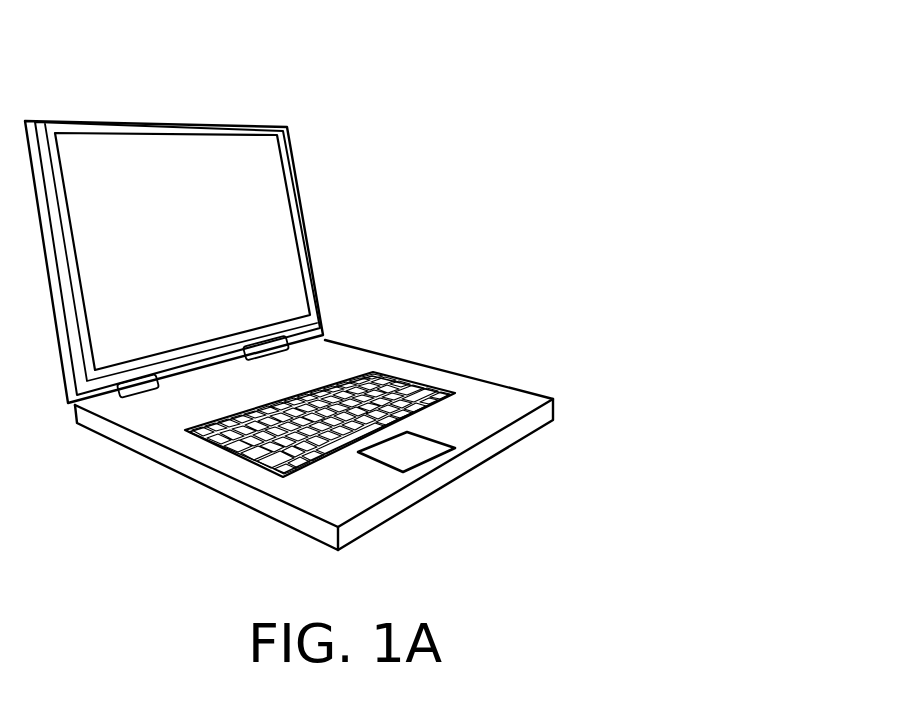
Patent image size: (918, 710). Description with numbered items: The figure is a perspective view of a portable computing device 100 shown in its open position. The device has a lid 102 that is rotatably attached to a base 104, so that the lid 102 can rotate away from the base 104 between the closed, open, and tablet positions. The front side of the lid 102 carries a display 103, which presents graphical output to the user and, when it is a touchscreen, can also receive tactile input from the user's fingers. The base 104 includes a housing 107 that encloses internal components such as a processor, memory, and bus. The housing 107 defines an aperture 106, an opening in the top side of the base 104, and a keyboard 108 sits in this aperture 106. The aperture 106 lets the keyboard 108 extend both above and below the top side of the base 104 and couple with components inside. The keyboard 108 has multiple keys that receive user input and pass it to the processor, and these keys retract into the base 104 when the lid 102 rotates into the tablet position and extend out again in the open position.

The portable computing device 100 is at (207, 108).
The lid 102 is at (196, 262).
The display 103 is at (182, 251).
The base 104 is at (342, 399).
The aperture 106 is at (217, 448).
The housing 107 is at (473, 430).
The keyboard 108 is at (373, 352).